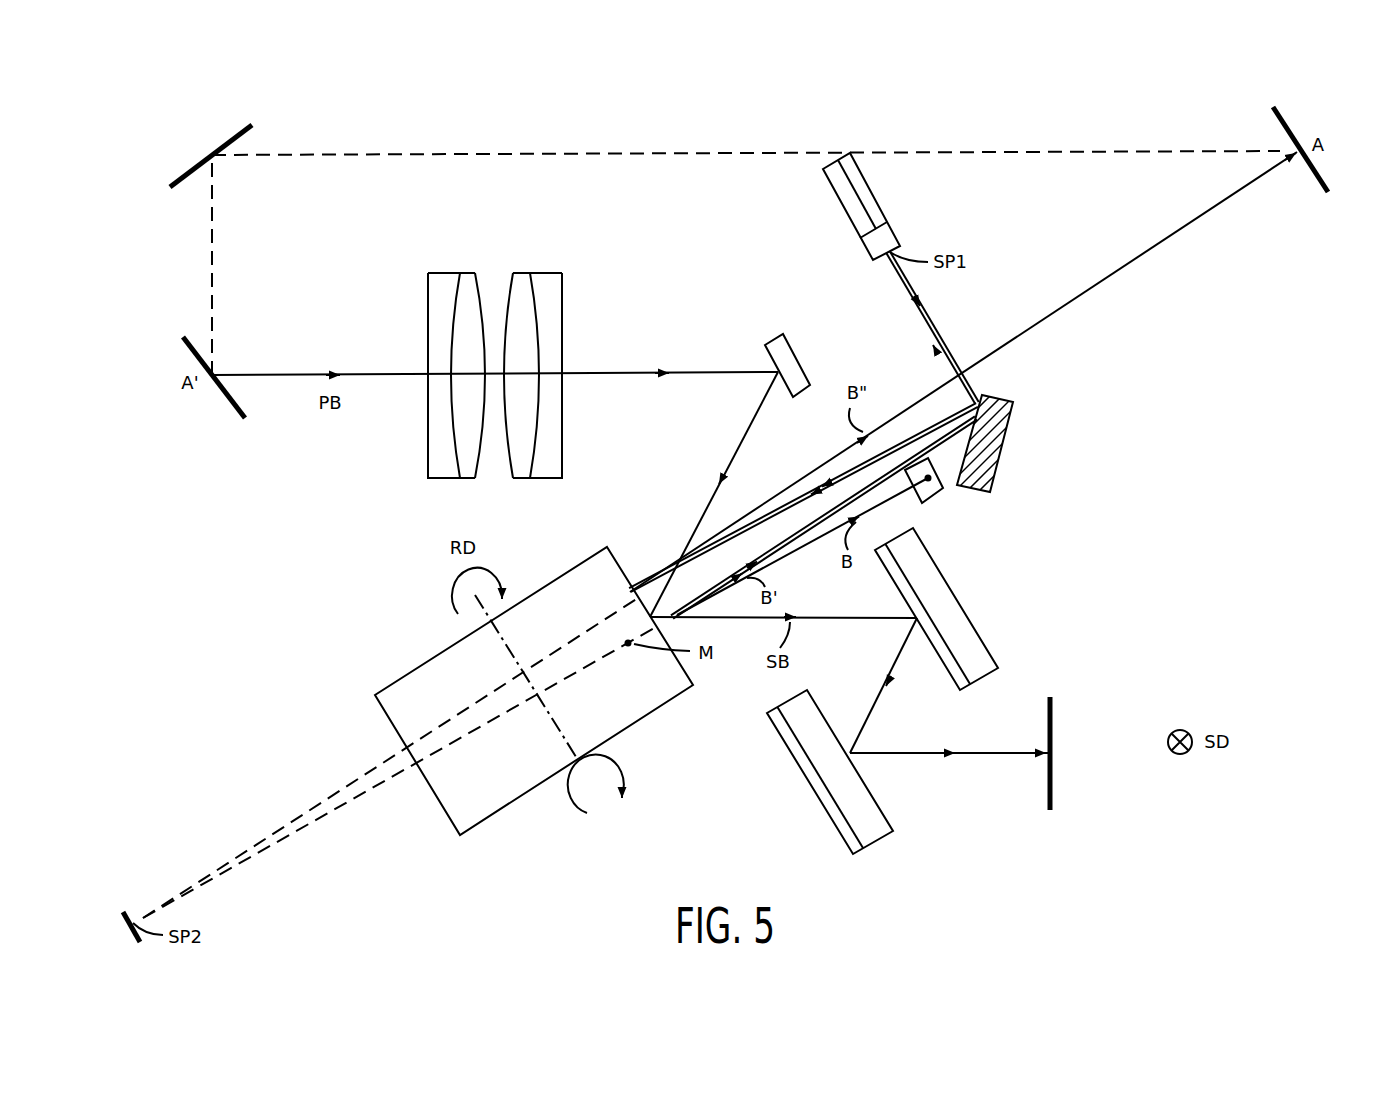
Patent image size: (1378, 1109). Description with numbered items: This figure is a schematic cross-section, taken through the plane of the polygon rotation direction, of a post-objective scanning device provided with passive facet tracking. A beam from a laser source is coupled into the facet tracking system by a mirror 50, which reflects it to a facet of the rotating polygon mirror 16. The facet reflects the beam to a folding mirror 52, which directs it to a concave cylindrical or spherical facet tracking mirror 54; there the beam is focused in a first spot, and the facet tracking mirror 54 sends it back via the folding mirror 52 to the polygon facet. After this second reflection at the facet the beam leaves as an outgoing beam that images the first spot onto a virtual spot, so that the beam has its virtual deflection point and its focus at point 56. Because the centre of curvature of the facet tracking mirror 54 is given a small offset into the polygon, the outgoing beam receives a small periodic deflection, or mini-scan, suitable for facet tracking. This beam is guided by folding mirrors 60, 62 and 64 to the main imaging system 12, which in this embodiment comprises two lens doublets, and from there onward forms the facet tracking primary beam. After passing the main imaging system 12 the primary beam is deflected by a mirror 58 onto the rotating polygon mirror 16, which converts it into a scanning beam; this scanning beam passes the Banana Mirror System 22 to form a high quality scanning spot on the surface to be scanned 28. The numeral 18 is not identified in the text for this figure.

The main imaging system 12 is at (490, 270).
The polygon mirror 16 is at (633, 702).
The rotation axis 18 is at (580, 763).
The Banana Mirror System 22 is at (978, 667).
The surface to be scanned 28 is at (1053, 787).
The mirror 50 is at (940, 493).
The folding mirror 52 is at (993, 442).
The facet tracking mirror 54 is at (900, 236).
The virtual focus point 56 is at (152, 893).
The mirror 58 is at (790, 367).
The folding mirror 60 is at (1317, 170).
The folding mirror 62 is at (227, 140).
The folding mirror 64 is at (232, 405).